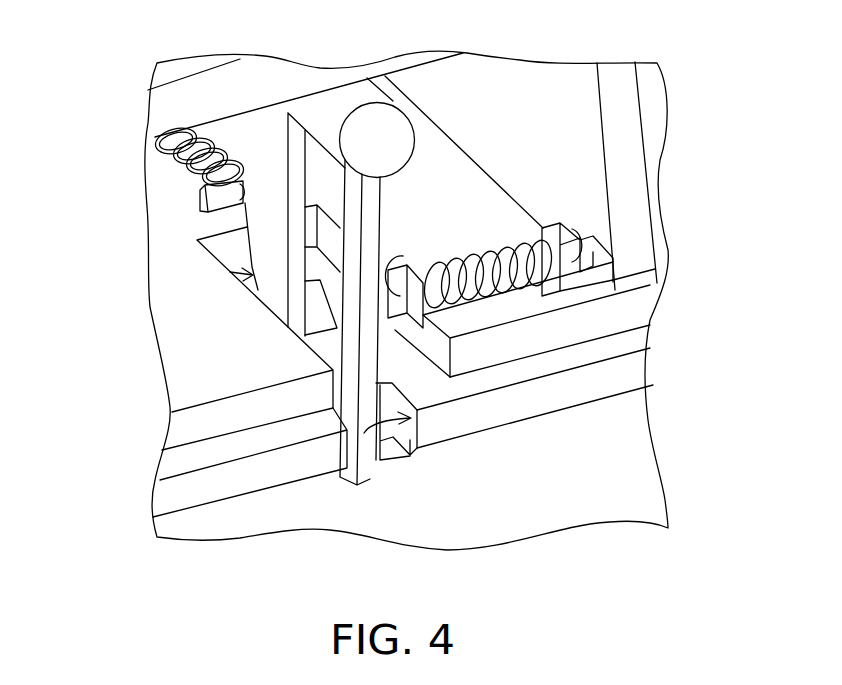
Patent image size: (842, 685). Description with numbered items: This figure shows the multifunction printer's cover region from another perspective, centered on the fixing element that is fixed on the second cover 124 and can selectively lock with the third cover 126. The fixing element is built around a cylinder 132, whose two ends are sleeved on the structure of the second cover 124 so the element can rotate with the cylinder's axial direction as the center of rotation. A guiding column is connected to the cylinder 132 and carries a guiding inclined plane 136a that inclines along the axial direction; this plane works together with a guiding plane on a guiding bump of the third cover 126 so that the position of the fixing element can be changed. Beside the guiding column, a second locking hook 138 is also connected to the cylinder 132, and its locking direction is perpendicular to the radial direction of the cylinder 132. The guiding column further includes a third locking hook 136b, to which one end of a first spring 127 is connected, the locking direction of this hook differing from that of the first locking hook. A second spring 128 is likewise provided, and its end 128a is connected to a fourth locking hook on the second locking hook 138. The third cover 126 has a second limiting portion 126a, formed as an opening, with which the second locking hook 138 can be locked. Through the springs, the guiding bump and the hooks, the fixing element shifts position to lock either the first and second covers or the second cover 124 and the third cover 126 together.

The second cover 124 is at (627, 310).
The third cover 126 is at (617, 375).
The second limiting portion 126a is at (364, 433).
The first spring 127 is at (180, 140).
The second spring 128 is at (478, 250).
The end of the second spring 128a is at (420, 250).
The cylinder 132 is at (372, 130).
The guiding inclined plane 136a is at (240, 272).
The third locking hook 136b is at (200, 192).
The second locking hook 138 is at (367, 478).